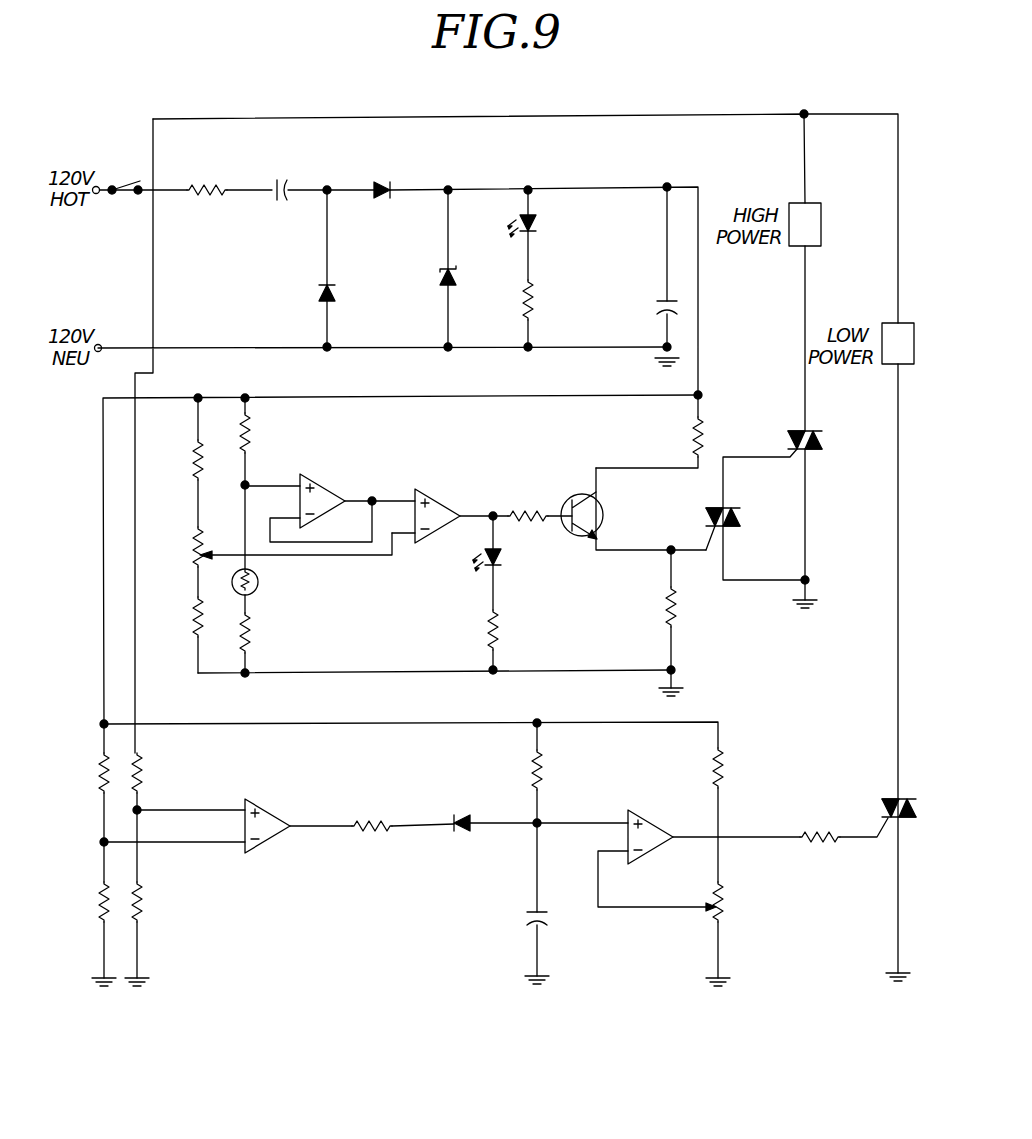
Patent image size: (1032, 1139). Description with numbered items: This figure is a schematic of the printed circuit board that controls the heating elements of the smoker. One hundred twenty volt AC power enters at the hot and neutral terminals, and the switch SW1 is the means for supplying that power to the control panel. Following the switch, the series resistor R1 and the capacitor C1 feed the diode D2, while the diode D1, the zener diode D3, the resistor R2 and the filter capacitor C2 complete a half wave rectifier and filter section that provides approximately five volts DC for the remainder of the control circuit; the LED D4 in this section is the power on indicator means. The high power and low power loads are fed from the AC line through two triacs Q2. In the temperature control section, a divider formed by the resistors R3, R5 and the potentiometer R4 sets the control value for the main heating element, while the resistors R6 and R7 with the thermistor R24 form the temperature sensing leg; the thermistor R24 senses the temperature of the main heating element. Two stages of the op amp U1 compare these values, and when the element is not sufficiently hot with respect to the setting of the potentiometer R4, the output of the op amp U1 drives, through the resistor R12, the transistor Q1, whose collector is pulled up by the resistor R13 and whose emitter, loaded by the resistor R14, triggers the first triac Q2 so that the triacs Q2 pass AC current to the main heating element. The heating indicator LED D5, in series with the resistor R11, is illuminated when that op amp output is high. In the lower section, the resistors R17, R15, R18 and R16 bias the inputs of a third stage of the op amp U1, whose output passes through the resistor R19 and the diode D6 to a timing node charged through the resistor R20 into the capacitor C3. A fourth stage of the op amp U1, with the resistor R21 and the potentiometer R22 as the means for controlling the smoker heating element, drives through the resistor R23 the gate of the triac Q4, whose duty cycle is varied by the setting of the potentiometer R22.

The switch SW1 is at (126, 199).
The resistor 10 ohm R1 is at (199, 227).
The capacitor 3.3uF 250V C1 is at (278, 200).
The diode 1N4004 D2 is at (383, 186).
The diode 1N4004 D1 is at (298, 268).
The zener diode 1N5231 D3 is at (416, 268).
The LED D4 is at (565, 235).
The resistor 1K R2 is at (547, 295).
The capacitor 680uF C2 is at (634, 267).
The resistor 10K R3 is at (181, 462).
The potentiometer R4 is at (276, 556).
The resistor 1.2K R5 is at (176, 631).
The resistor 10K R6 is at (265, 483).
The thermistor R24 is at (270, 584).
The resistor 560 ohm R7 is at (273, 634).
The op amp U1 is at (450, 670).
The resistor 510 ohm R12 is at (538, 490).
The transistor Q1 is at (633, 511).
The resistor 820 ohm R13 is at (649, 431).
The LED D5 is at (524, 563).
The resistor 680 ohm R11 is at (465, 635).
The resistor 10K R14 is at (657, 623).
The triac Q2 is at (798, 504).
The resistor 100K R17 is at (79, 803).
The resistor 1.0M R15 is at (161, 813).
The resistor 2.7K R18 is at (86, 930).
The resistor 10K R16 is at (156, 930).
The resistor 3K R19 is at (403, 798).
The diode 1N4004 D6 is at (486, 798).
The resistor 330K R20 is at (564, 773).
The capacitor 0.047mF C3 is at (499, 903).
The resistor 6.8K R21 is at (743, 812).
The potentiometer R22 is at (738, 933).
The resistor 1.8K R23 is at (844, 854).
The triac Q4 is at (864, 867).